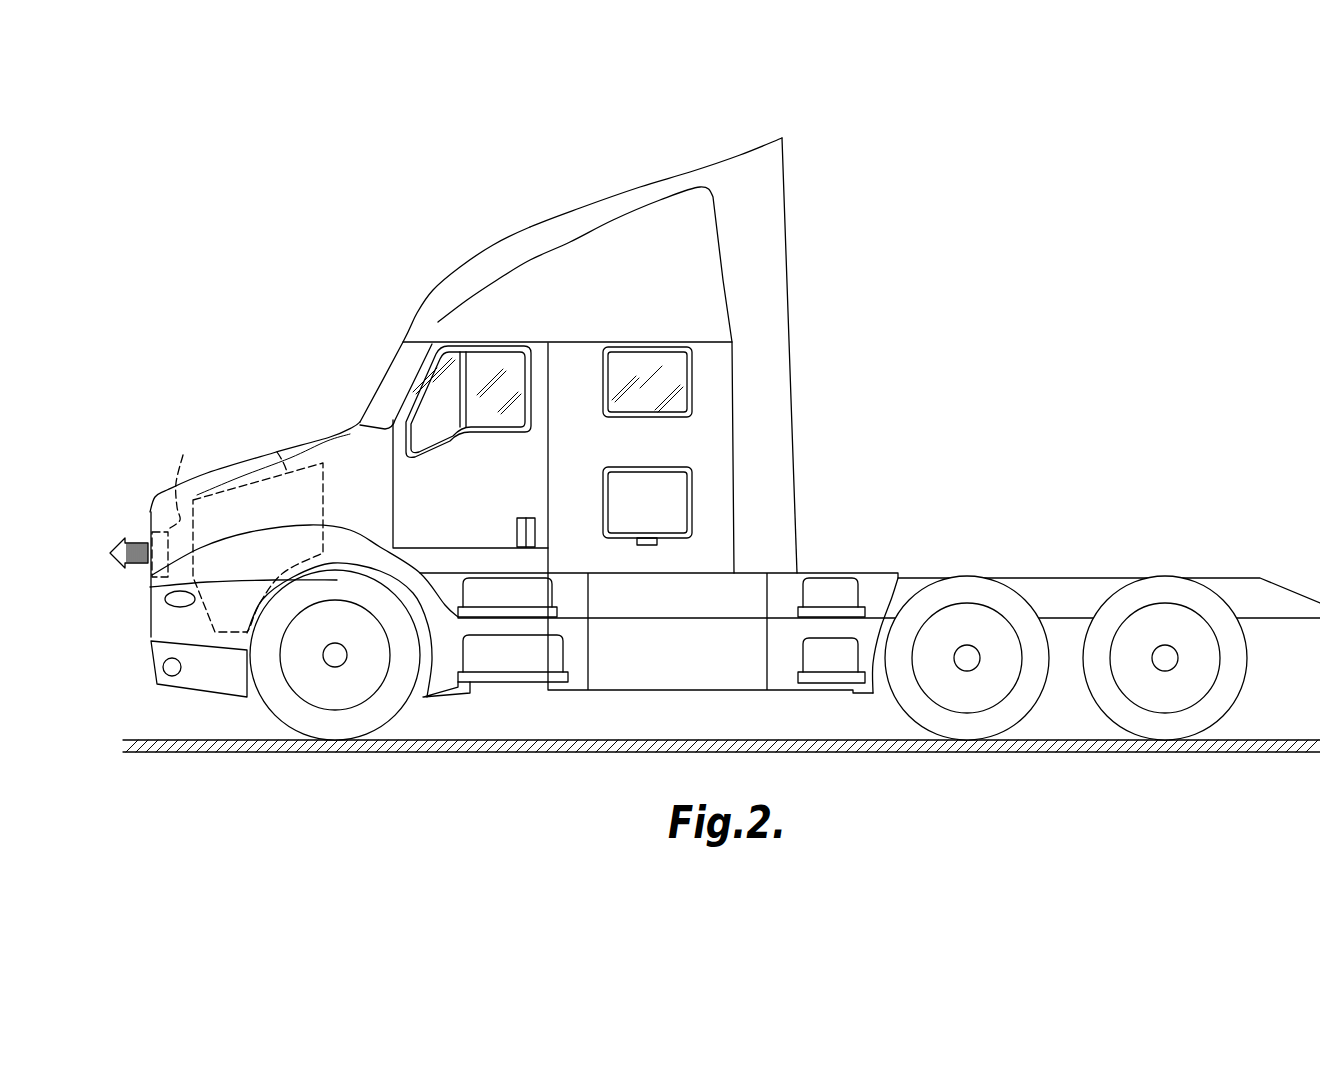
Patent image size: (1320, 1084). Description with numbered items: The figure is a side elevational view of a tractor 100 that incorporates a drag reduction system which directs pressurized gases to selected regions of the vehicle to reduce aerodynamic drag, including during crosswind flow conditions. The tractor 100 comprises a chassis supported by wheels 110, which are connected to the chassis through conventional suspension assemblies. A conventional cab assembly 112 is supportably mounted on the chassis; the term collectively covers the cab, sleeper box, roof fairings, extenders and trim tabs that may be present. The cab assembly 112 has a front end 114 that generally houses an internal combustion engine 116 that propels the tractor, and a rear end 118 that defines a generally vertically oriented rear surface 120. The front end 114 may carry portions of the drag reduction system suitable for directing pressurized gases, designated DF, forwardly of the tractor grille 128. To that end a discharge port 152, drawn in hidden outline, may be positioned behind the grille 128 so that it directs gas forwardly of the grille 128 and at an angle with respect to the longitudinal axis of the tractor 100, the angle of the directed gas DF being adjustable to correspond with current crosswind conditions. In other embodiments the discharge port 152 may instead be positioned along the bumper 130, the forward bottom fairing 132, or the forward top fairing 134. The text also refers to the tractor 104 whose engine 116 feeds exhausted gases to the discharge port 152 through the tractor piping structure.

The tractor 100 is at (253, 274).
The tractor 104 is at (340, 370).
The wheels 110 is at (262, 695).
The cab assembly 112 is at (540, 232).
The front end 114 is at (163, 490).
The internal combustion engine 116 is at (290, 452).
The rear end 118 is at (741, 172).
The rear surface 120 is at (795, 198).
The tractor grille 128 is at (148, 586).
The bumper 130 is at (147, 640).
The forward bottom fairing 132 is at (153, 663).
The forward top fairing 134 is at (462, 302).
The discharge port 152 is at (183, 461).
The directed gas DF is at (120, 540).